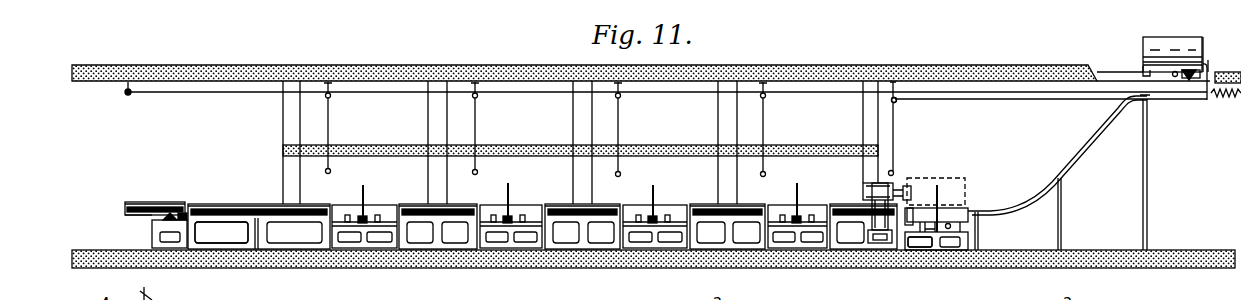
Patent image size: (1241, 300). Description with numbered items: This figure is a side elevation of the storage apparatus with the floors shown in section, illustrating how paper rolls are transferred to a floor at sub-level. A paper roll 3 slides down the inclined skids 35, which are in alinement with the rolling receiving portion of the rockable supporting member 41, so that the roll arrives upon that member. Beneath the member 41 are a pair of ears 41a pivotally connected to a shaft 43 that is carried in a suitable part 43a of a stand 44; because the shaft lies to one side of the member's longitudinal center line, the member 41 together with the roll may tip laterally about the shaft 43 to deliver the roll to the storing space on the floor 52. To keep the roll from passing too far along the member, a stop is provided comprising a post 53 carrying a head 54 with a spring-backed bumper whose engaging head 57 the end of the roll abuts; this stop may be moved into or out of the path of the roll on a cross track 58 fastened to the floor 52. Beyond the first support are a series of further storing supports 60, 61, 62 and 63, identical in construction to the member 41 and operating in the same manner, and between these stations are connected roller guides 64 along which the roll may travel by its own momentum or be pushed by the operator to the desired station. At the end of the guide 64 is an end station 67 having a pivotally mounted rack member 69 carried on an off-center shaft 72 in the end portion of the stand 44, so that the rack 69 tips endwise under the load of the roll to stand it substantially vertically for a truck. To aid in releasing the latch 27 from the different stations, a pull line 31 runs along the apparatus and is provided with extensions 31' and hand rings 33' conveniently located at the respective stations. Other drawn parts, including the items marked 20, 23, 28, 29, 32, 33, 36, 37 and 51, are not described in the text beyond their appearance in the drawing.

The paper roll 3 is at (1168, 44).
The tank bracket 20 is at (1143, 68).
The valve 23 is at (1178, 80).
The latch 27 is at (1210, 66).
The wall block 28 is at (1216, 74).
The spring 29 is at (1222, 97).
The pull line 31 is at (666, 115).
The extensions 31' is at (564, 127).
The ring coupling 32 is at (897, 102).
The rod end ring 33 is at (908, 139).
The hand rings 33' is at (564, 173).
The skids 35 is at (1092, 150).
The post 36 is at (1148, 197).
The post 37 is at (1062, 215).
The rockable supporting member 41 is at (962, 212).
The ears 41a is at (949, 222).
The shaft 43 is at (909, 222).
The part of stand 43a is at (928, 232).
The stand 44 is at (255, 233).
The pin 51 is at (939, 193).
The floor 52 is at (1007, 263).
The post 53 is at (877, 213).
The head 54 is at (866, 191).
The engaging head 57 is at (908, 182).
The cross track 58 is at (872, 246).
The storing support 60 is at (789, 210).
The storing support 61 is at (663, 210).
The storing support 62 is at (520, 208).
The storing support 63 is at (373, 207).
The roller guides 64 is at (268, 206).
The end station 67 is at (168, 201).
The rack member 69 is at (125, 217).
The shaft 72 is at (155, 219).